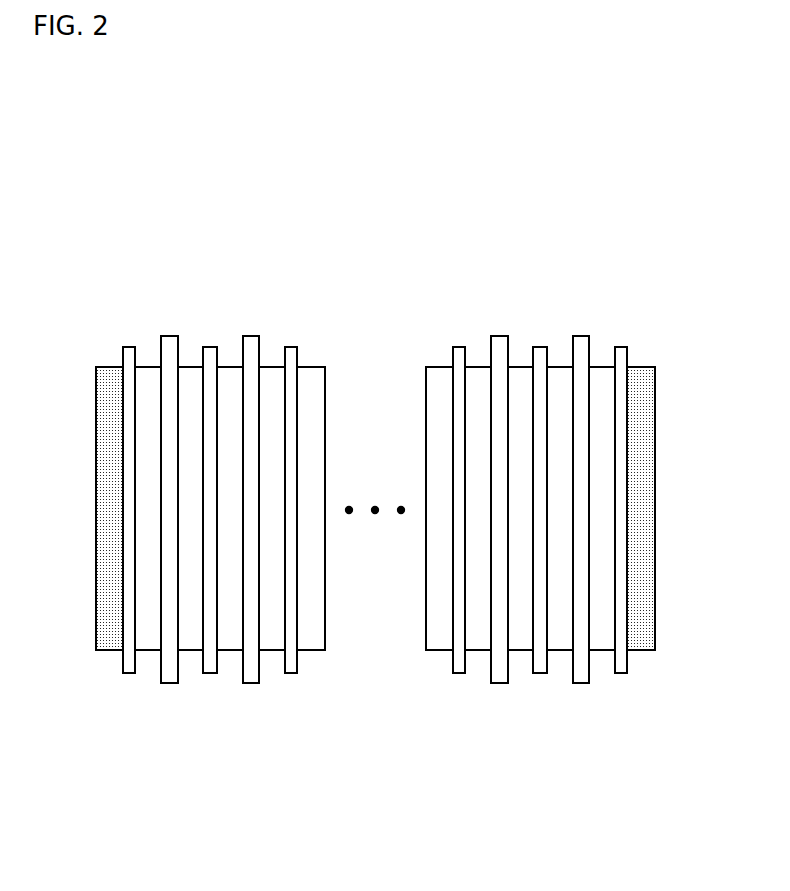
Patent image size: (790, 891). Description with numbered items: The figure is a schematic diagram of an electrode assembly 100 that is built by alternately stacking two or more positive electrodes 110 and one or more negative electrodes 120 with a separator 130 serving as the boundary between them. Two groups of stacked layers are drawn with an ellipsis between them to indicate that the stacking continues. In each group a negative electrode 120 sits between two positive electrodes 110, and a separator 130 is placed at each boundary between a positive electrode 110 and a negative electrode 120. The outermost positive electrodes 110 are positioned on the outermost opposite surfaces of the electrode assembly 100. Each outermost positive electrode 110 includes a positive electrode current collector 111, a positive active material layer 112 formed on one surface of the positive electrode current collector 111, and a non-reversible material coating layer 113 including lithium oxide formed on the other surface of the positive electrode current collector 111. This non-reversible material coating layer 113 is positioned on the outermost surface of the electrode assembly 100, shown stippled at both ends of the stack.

The electrode assembly 100 is at (216, 190).
The positive electrode 110 is at (375, 516).
The positive electrode current collector 111 is at (130, 673).
The positive active material layer 112 is at (151, 650).
The non-reversible material coating layer 113 is at (100, 507).
The negative electrode 120 is at (178, 334).
The separator 130 is at (168, 335).